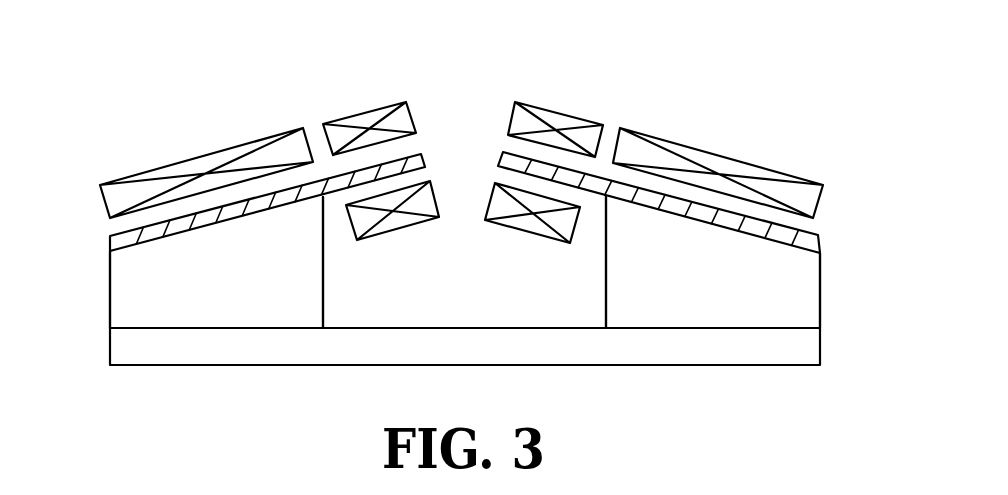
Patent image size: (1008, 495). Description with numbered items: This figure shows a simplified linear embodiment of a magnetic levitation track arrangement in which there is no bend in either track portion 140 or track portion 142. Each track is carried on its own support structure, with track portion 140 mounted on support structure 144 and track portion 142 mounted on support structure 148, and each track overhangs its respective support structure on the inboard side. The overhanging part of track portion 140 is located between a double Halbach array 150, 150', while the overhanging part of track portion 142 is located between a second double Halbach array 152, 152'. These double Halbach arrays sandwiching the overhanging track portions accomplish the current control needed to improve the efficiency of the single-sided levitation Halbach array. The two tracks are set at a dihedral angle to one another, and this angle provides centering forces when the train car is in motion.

The track portion 140 is at (112, 238).
The track portion 142 is at (800, 230).
The support structure 144 is at (253, 297).
The support structure 148 is at (744, 301).
The Halbach array 150 is at (360, 100).
The Halbach array 150' is at (401, 135).
The Halbach array 152 is at (578, 111).
The Halbach array 152' is at (528, 138).